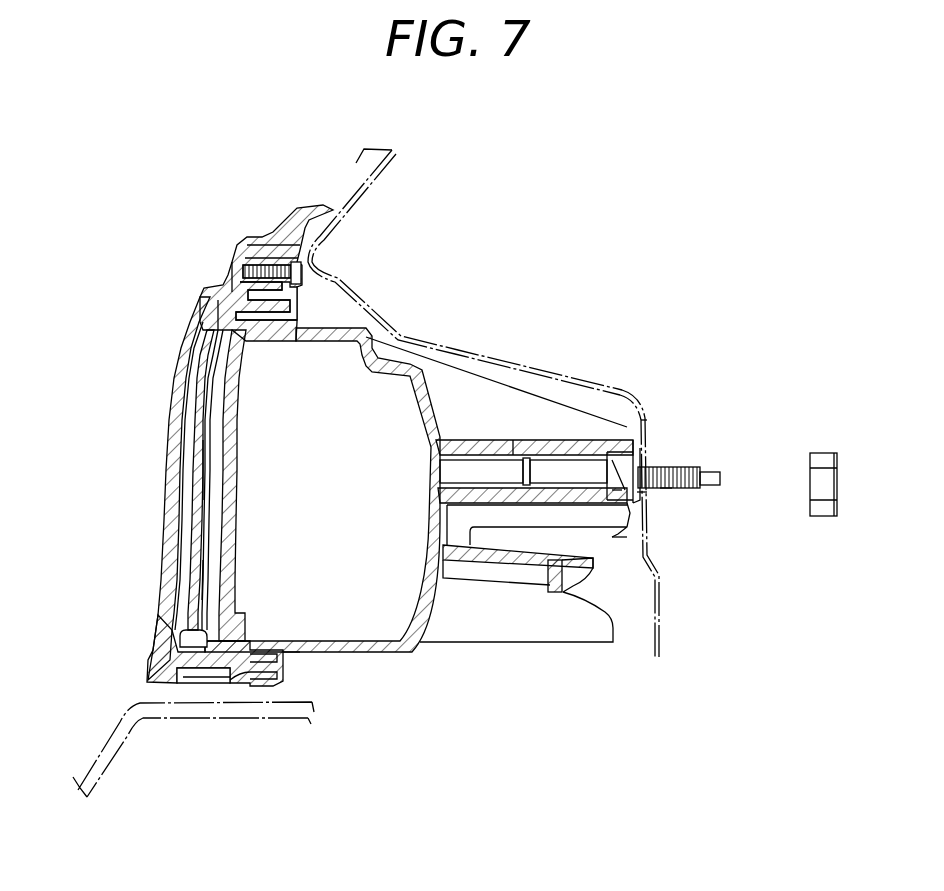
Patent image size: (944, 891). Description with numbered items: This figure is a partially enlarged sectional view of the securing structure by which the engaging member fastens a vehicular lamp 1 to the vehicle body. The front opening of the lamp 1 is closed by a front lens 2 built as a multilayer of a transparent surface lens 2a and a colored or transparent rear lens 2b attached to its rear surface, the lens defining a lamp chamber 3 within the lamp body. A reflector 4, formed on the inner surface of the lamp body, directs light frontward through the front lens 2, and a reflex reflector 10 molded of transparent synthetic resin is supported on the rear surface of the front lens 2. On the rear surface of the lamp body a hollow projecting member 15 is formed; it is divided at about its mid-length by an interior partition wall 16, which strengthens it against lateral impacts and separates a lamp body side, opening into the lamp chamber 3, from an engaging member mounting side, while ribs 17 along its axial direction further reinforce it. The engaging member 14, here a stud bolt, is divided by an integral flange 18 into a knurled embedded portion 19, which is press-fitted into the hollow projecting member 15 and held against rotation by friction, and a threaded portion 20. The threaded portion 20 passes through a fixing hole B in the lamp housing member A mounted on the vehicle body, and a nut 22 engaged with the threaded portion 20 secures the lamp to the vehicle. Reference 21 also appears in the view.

The vehicular lamp 1 is at (434, 394).
The front lens 2 is at (137, 488).
The surface lens 2a is at (183, 420).
The rear lens 2b is at (193, 457).
The lamp chamber 3 is at (227, 402).
The reflector 4 is at (437, 570).
The reflex reflector 10 is at (197, 568).
The engaging member 14 is at (665, 463).
The hollow projecting member 15 is at (513, 440).
The partition wall 16 is at (533, 477).
The rib 17 is at (558, 405).
The flange 18 is at (623, 537).
The embedded portion 19 is at (617, 505).
The threaded portion 20 is at (673, 485).
The flange 21 is at (650, 423).
The nut 22 is at (820, 452).
The lamp housing member A is at (471, 378).
The fixing hole B is at (641, 492).